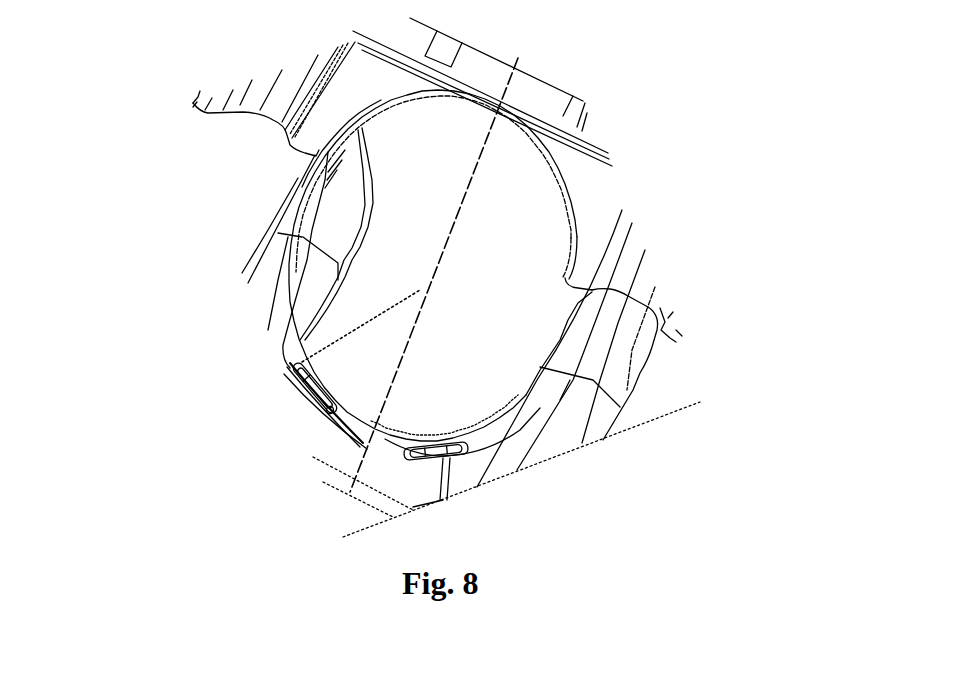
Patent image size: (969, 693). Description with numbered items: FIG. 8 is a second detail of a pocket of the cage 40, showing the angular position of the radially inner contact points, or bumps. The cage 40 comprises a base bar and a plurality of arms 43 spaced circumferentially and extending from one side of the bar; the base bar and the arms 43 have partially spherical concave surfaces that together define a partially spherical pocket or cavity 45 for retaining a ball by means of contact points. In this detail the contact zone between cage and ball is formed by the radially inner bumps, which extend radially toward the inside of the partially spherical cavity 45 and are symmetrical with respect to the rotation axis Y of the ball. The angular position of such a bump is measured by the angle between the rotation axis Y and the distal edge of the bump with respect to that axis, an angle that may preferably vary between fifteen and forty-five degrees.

The cage 40 is at (194, 205).
The arms 43 is at (616, 362).
The partially spherical pocket 45 is at (498, 304).
The rotation axis of the ball Y is at (445, 255).